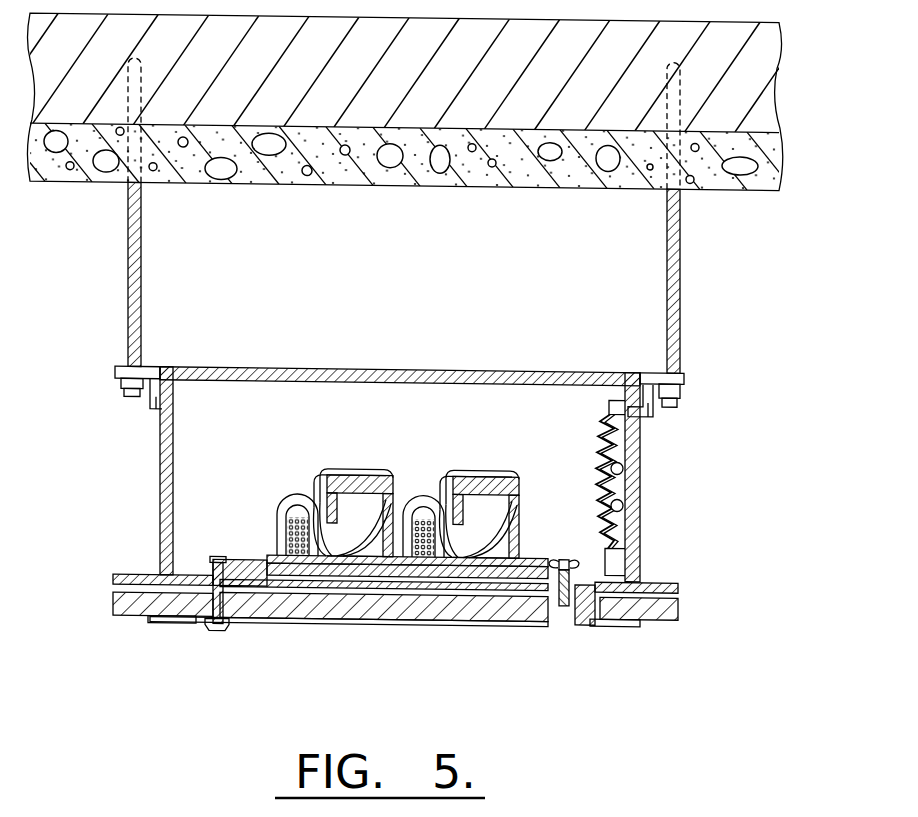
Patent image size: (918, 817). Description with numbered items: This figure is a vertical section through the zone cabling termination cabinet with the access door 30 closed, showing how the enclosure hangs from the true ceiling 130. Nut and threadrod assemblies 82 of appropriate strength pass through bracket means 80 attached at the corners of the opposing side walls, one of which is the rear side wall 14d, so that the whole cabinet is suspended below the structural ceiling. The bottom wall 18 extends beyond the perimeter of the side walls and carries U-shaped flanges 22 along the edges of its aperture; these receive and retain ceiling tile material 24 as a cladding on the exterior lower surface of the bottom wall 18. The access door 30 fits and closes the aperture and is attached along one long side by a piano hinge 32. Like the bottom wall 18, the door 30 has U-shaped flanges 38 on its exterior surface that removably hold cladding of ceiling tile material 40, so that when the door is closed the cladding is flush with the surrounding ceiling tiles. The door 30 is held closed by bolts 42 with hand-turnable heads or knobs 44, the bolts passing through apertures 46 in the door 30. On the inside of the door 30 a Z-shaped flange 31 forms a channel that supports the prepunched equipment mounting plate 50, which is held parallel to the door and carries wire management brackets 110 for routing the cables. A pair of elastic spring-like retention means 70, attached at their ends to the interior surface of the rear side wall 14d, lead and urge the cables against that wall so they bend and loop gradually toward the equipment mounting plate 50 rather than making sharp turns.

The true ceiling 130 is at (757, 163).
The nut and threadrod assemblies 82 is at (128, 392).
The bracket means 80 is at (155, 408).
The rear side wall 14d is at (631, 505).
The elastic spring-like retention means 70 is at (625, 455).
The wire management brackets 110 is at (298, 500).
The Z-shaped flange 31 is at (267, 572).
The apertures 46 is at (200, 563).
The U-shaped flanges 38 is at (355, 609).
The equipment mounting plate 50 is at (320, 587).
The ceiling tile material 40 is at (418, 597).
The access door 30 is at (478, 592).
The bottom wall 18 is at (125, 574).
The ceiling tile material 24 is at (113, 605).
The U-shaped flanges 22 is at (178, 620).
The bolts 42 is at (218, 628).
The hand-turnable heads or knobs 44 is at (226, 629).
The piano hinge 32 is at (578, 620).